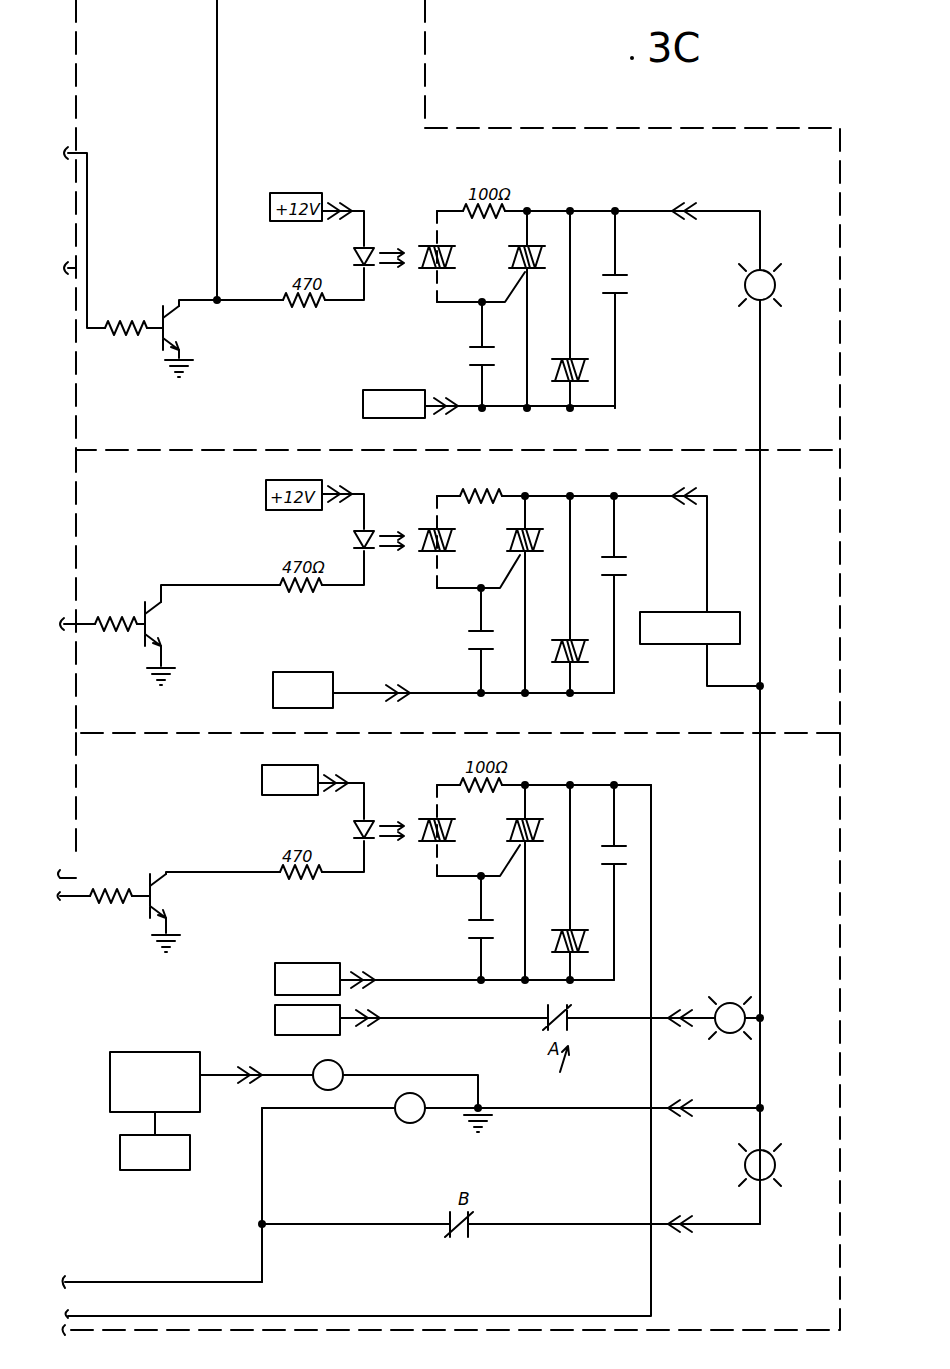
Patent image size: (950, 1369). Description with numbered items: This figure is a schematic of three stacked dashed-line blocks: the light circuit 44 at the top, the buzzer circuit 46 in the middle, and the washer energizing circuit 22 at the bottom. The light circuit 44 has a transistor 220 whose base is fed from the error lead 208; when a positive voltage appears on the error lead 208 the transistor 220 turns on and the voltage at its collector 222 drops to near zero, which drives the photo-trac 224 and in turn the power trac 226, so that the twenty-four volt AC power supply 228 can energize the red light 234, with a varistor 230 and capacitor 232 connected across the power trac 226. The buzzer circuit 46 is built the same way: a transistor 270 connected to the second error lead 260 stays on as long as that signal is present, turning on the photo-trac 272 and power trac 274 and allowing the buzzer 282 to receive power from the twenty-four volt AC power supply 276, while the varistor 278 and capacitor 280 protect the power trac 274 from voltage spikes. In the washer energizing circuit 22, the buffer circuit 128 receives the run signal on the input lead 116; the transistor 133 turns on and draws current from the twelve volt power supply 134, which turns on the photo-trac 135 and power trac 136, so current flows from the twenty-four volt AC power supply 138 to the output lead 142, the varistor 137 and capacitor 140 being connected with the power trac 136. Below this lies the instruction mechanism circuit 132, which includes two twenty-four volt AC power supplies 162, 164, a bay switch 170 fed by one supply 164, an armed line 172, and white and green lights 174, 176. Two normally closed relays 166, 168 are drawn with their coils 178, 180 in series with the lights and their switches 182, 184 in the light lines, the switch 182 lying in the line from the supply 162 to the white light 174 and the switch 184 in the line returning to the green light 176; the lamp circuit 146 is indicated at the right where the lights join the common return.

The washer energizing circuit 22 is at (838, 834).
The light circuit 44 is at (846, 178).
The buzzer circuit 46 is at (842, 569).
The input lead 116 is at (78, 900).
The buffer circuit 128 is at (172, 805).
The instruction mechanism circuit 132 is at (125, 1222).
The transistor 133 is at (148, 910).
The 12 volt power supply 134 is at (310, 765).
The photo-trac 135 is at (397, 800).
The power trac 136 is at (540, 820).
The varistor 137 is at (573, 934).
The 24 volt AC power supply 138 is at (321, 963).
The capacitor 140 is at (622, 843).
The output lead 142 is at (653, 922).
The lamp circuit 146 is at (780, 982).
The 24 volt AC power supply 162 is at (275, 1018).
The 24 volt AC power supply 164 is at (120, 1155).
The normally closed relay 166 is at (502, 1103).
The normally closed relay 168 is at (372, 1196).
The bay switch 170 is at (135, 1052).
The armed line 172 is at (180, 1282).
The white light 174 is at (722, 1040).
The green light 176 is at (742, 1165).
The coil 178 is at (418, 1123).
The coil 180 is at (340, 1065).
The switch 182 is at (546, 1021).
The switch 184 is at (471, 1222).
The error lead 208 is at (88, 237).
The transistor 220 is at (158, 334).
The collector 222 is at (178, 300).
The photo-trac 224 is at (409, 218).
The power trac 226 is at (538, 250).
The 24 volt AC power supply 228 is at (379, 390).
The varistor 230 is at (590, 357).
The capacitor 232 is at (622, 278).
The red light 234 is at (765, 270).
The second error lead 260 is at (86, 620).
The transistor 270 is at (142, 631).
The photo-trac 272 is at (396, 512).
The power trac 274 is at (537, 528).
The 24 volt AC power supply 276 is at (308, 668).
The varistor 278 is at (588, 664).
The capacitor 280 is at (621, 559).
The buzzer 282 is at (670, 612).